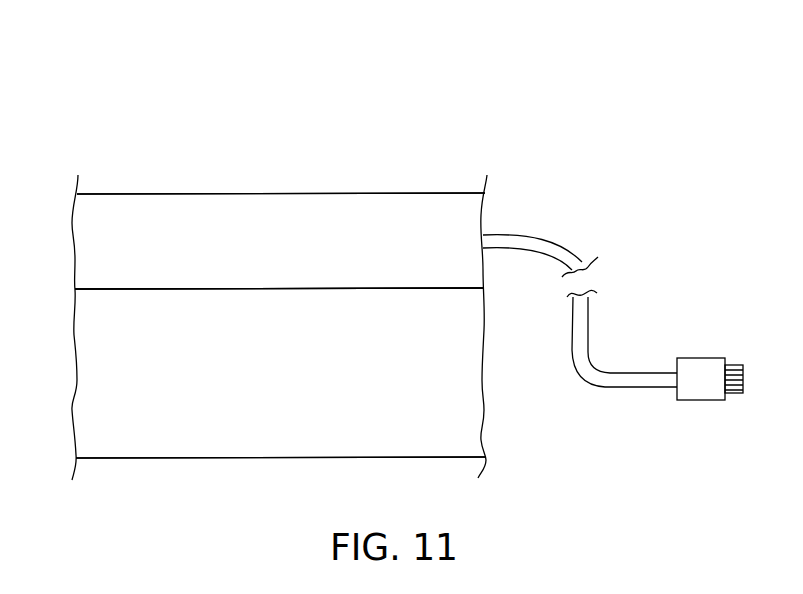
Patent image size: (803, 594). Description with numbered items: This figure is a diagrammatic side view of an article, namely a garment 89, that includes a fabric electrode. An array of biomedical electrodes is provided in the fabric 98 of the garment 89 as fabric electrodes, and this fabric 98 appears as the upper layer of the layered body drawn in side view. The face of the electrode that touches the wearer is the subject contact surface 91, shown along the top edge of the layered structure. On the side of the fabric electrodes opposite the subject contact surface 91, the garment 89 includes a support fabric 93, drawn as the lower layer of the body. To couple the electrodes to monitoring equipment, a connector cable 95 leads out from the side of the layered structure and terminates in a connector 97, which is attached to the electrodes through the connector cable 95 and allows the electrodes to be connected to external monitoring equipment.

The garment 89 is at (382, 62).
The subject contact surface 91 is at (269, 193).
The fabric 98 is at (88, 247).
The support fabric 93 is at (88, 350).
The connector cable 95 is at (562, 246).
The connector 97 is at (700, 358).